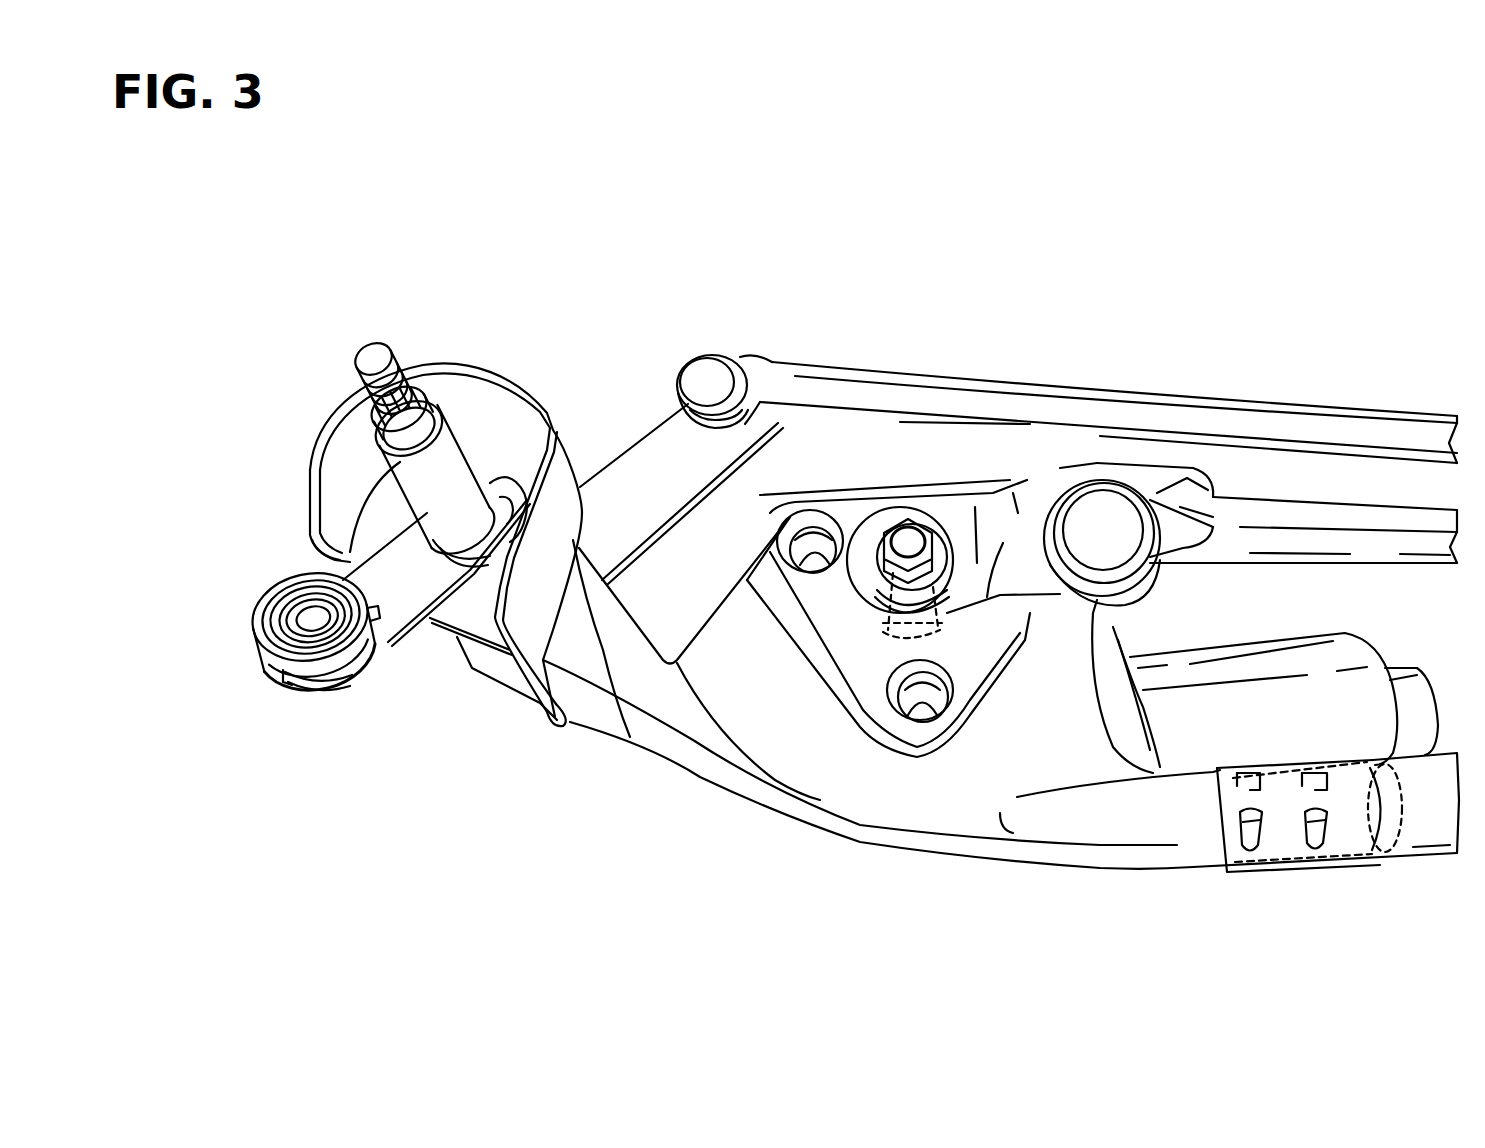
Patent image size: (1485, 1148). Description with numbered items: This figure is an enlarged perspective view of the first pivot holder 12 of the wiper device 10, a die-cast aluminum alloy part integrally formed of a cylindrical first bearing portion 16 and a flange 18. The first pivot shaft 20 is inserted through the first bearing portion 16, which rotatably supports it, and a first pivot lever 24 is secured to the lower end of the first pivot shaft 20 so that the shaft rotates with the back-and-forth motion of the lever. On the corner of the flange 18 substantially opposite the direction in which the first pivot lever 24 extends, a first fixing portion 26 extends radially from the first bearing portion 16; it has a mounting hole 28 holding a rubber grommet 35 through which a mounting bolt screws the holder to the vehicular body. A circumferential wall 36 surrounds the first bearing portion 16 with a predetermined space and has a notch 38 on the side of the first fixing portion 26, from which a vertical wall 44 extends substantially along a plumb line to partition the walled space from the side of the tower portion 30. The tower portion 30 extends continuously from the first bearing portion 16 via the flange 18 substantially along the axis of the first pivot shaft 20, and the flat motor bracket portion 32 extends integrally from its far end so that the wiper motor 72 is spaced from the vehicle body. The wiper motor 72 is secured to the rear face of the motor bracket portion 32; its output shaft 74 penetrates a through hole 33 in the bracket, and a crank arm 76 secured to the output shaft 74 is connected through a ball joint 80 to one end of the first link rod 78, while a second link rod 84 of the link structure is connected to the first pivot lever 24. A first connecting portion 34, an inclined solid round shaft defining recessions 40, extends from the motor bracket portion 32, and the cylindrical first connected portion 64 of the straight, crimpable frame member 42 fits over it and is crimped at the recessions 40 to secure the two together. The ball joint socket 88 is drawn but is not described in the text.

The wiper device 10 is at (1098, 354).
The first pivot holder 12 is at (310, 452).
The first bearing portion 16 is at (451, 455).
The flange 18 is at (487, 417).
The first pivot shaft 20 is at (360, 356).
The first pivot lever 24 is at (650, 452).
The first fixing portion 26 is at (270, 678).
The mounting hole 28 is at (294, 661).
The tower portion 30 is at (643, 673).
The motor bracket portion 32 is at (872, 787).
The through hole 33 is at (947, 593).
The first connecting portion 34 is at (1353, 862).
The rubber grommet 35 is at (367, 660).
The circumferential wall 36 is at (307, 492).
The notch 38 is at (328, 556).
The recessions 40 is at (1310, 775).
The frame member 42 is at (1413, 860).
The vertical wall 44 is at (551, 738).
The first connected portion 64 is at (1227, 807).
The wiper motor 72 is at (1327, 657).
The output shaft 74 is at (905, 537).
The crank arm 76 is at (1033, 575).
The first link rod 78 is at (1277, 558).
The ball joint 80 is at (1113, 537).
The second link rod 84 is at (1183, 392).
The ball joint socket 88 is at (705, 373).